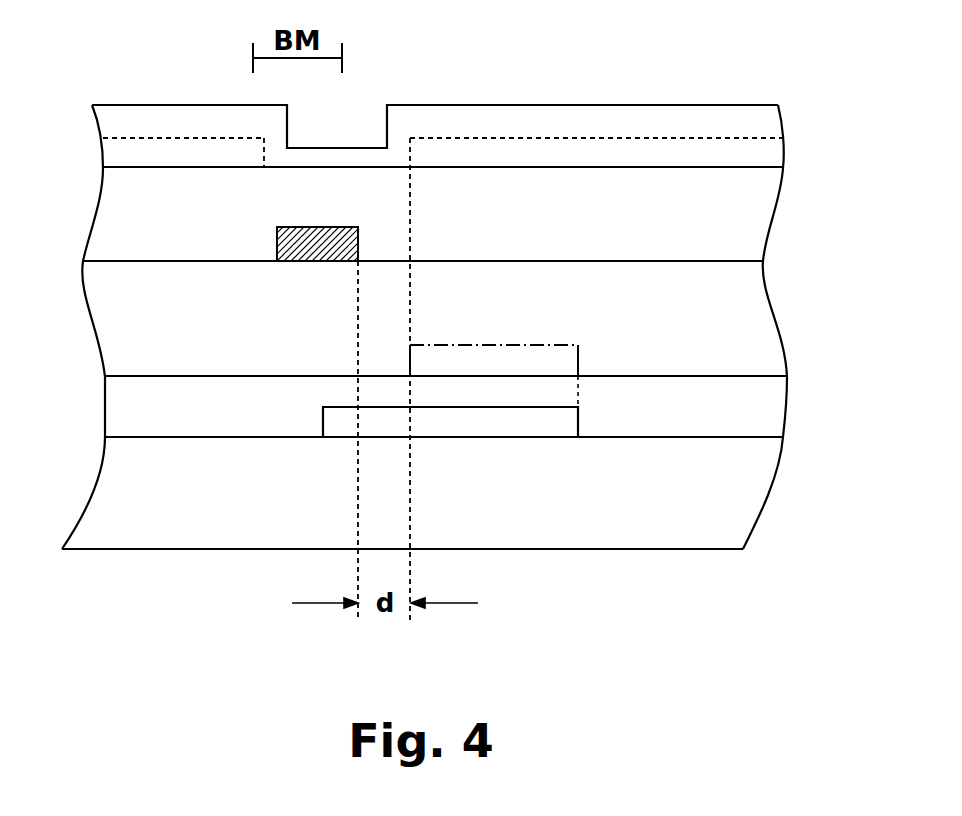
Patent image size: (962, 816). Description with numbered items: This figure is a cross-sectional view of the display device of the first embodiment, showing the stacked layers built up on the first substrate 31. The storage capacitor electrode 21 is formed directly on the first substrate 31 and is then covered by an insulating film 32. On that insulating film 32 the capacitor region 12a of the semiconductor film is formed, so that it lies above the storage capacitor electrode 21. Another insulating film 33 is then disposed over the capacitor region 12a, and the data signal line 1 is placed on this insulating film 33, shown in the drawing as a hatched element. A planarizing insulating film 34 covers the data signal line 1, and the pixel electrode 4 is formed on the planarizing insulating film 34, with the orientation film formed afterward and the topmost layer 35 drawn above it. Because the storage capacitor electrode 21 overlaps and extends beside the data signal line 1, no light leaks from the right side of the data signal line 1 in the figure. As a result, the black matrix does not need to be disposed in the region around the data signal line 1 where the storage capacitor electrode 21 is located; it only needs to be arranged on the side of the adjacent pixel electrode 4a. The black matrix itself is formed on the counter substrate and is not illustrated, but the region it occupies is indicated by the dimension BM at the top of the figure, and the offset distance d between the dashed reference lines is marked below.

The data signal line 1 is at (297, 247).
The pixel electrode 4 is at (765, 150).
The adjacent pixel electrode 4a is at (118, 158).
The capacitor region 12a is at (570, 365).
The storage capacitor electrode 21 is at (572, 418).
The first substrate 31 is at (730, 503).
The insulating film 32 is at (765, 390).
The insulating film 33 is at (745, 285).
The planarizing insulating film 34 is at (745, 220).
The overcoat layer 35 is at (765, 117).